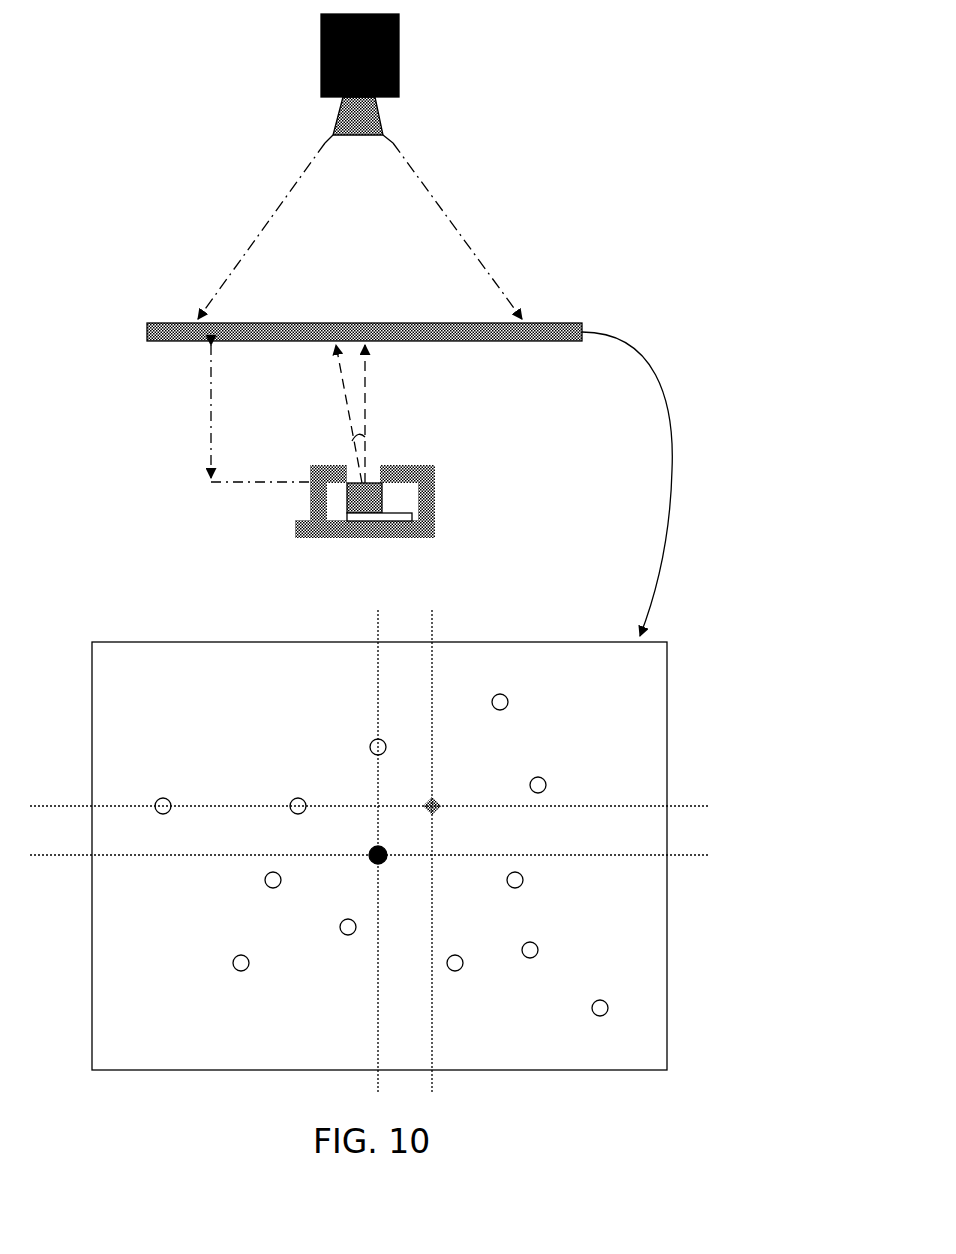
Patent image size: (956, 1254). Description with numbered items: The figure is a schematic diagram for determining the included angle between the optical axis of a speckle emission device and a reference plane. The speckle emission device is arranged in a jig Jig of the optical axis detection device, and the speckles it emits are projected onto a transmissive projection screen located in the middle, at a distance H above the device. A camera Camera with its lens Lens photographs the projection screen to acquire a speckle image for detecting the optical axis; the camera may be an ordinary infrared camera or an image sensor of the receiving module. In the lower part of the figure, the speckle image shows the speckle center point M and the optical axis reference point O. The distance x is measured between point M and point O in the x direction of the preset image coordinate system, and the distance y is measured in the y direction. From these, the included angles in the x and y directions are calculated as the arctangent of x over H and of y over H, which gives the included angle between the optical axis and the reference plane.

The camera Camera is at (399, 50).
The lens Lens is at (379, 114).
The distance H is at (243, 413).
The jig Jig is at (365, 538).
The distance x is at (405, 852).
The distance y is at (370, 830).
The optical axis reference point O is at (440, 795).
The speckle center point M is at (368, 867).